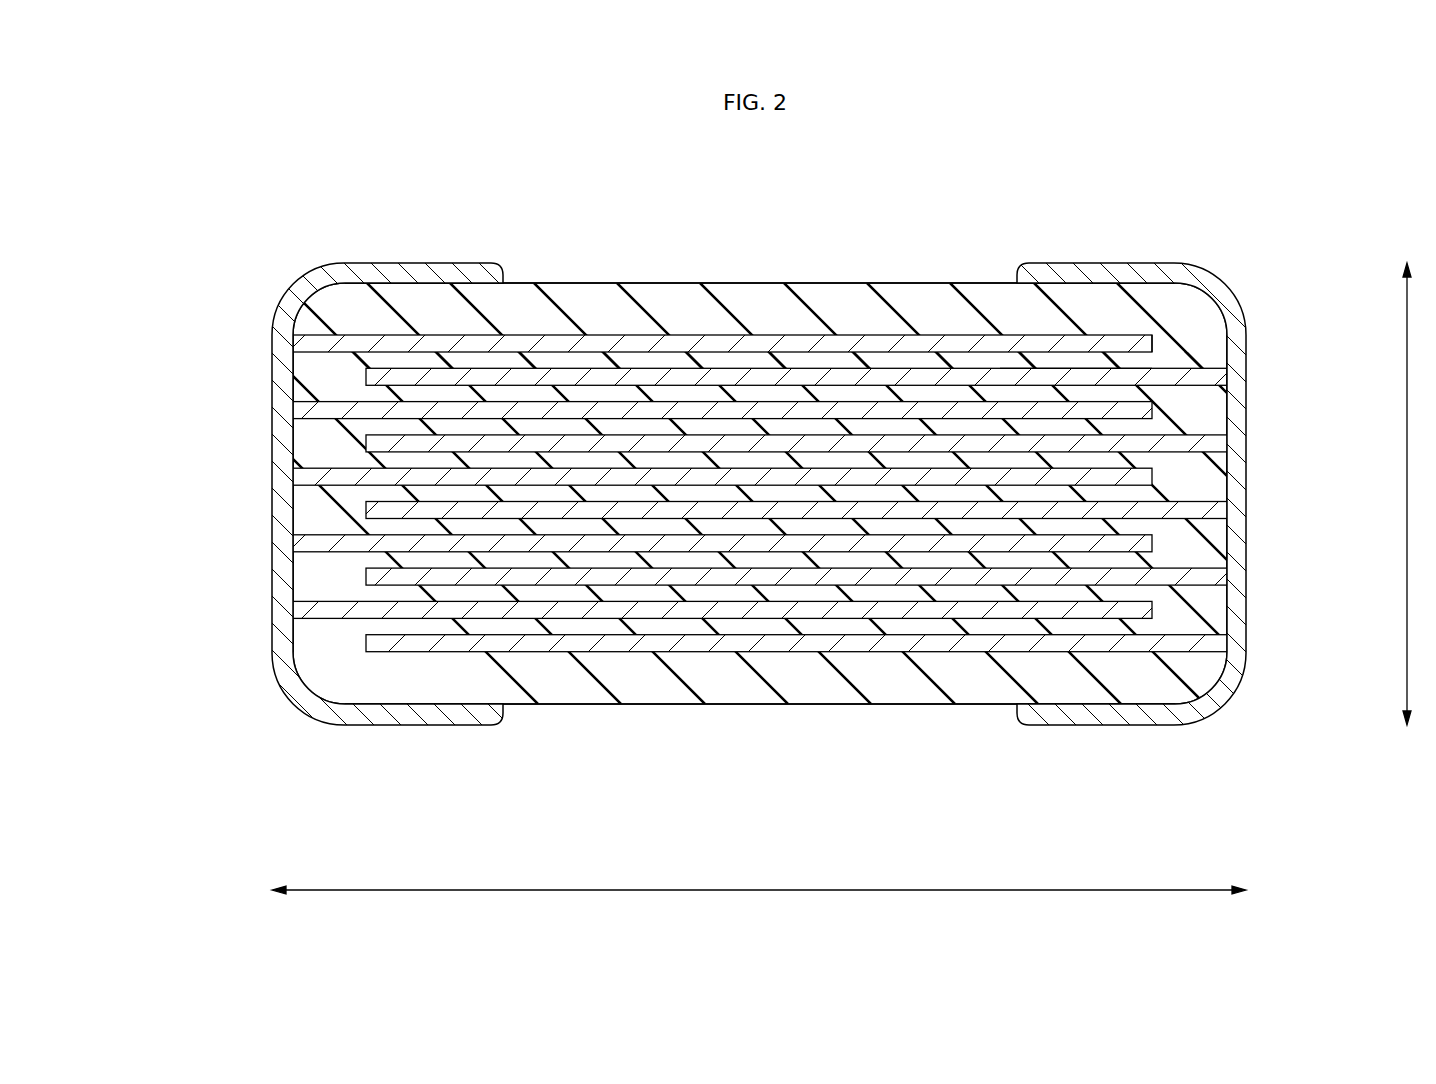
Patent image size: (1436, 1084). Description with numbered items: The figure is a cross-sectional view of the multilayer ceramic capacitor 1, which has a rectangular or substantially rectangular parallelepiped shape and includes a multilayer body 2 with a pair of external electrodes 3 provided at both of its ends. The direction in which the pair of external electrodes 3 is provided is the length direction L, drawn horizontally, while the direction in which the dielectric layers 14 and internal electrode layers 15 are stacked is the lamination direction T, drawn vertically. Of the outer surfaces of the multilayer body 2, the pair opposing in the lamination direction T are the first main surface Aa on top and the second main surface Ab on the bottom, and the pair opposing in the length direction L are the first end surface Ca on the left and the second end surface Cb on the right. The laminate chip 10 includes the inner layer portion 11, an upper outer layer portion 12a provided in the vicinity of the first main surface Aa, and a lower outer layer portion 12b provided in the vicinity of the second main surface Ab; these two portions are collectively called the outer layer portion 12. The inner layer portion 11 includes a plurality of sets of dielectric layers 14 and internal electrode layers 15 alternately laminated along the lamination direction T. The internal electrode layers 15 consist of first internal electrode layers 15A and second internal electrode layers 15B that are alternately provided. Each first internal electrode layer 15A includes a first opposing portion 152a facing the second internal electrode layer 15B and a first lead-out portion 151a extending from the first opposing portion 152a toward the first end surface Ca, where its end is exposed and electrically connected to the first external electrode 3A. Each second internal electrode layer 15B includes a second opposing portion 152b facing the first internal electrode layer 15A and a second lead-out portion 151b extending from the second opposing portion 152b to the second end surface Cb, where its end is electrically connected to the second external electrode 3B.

The multilayer ceramic capacitor 1 is at (1196, 215).
The multilayer body 2 is at (968, 270).
The external electrodes 3 is at (758, 494).
The first external electrode 3A is at (283, 525).
The second external electrode 3B is at (1234, 526).
The laminate chip 10 is at (578, 283).
The inner layer portion 11 is at (272, 652).
The outer layer portion 12 is at (776, 494).
The upper outer layer portion 12a is at (742, 305).
The lower outer layer portion 12b is at (742, 683).
The dielectric layer 14 is at (312, 378).
The internal electrode layer 15 is at (185, 400).
The first internal electrode layer 15A is at (310, 411).
The second internal electrode layer 15B is at (382, 443).
The first lead-out portion 151a is at (350, 343).
The first opposing portion 152a is at (1128, 346).
The second lead-out portion 151b is at (1184, 378).
The second opposing portion 152b is at (1060, 372).
The first main surface Aa is at (890, 282).
The second main surface Ab is at (888, 705).
The first end surface Ca is at (288, 575).
The second end surface Cb is at (1228, 604).
The lamination direction T is at (1419, 494).
The length direction L is at (759, 908).